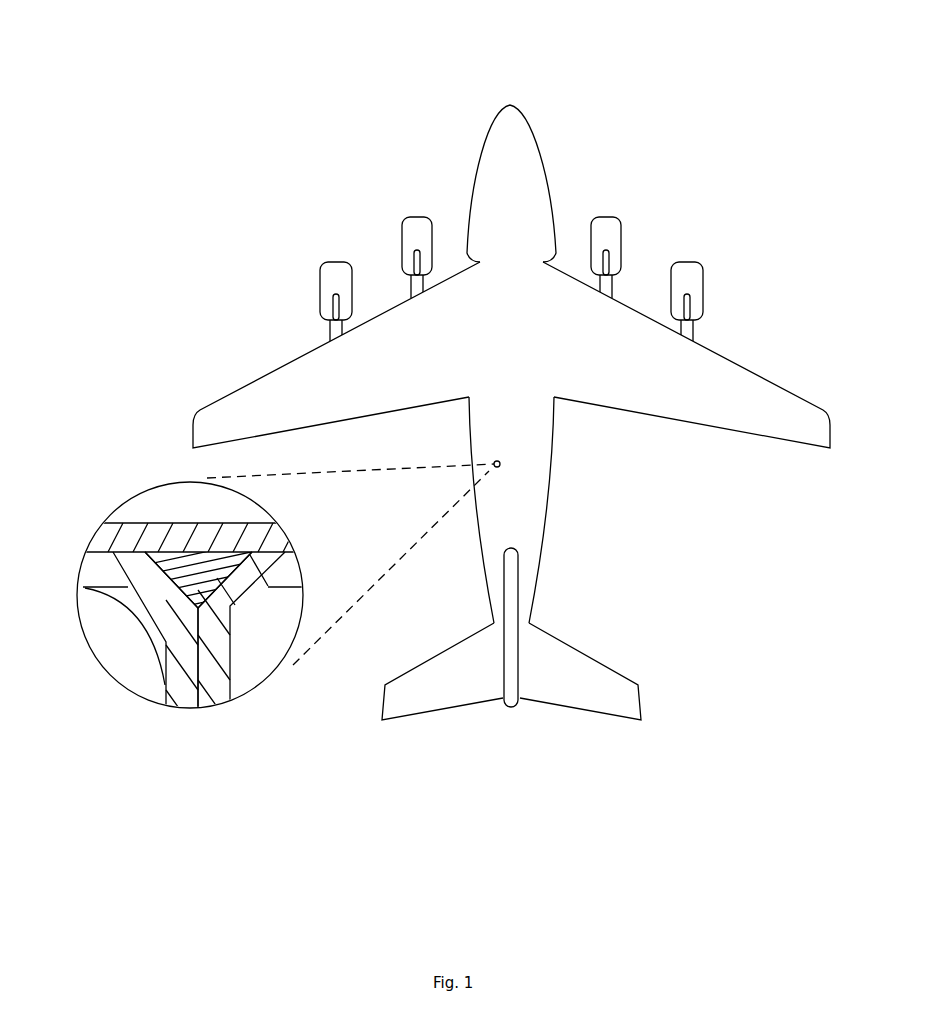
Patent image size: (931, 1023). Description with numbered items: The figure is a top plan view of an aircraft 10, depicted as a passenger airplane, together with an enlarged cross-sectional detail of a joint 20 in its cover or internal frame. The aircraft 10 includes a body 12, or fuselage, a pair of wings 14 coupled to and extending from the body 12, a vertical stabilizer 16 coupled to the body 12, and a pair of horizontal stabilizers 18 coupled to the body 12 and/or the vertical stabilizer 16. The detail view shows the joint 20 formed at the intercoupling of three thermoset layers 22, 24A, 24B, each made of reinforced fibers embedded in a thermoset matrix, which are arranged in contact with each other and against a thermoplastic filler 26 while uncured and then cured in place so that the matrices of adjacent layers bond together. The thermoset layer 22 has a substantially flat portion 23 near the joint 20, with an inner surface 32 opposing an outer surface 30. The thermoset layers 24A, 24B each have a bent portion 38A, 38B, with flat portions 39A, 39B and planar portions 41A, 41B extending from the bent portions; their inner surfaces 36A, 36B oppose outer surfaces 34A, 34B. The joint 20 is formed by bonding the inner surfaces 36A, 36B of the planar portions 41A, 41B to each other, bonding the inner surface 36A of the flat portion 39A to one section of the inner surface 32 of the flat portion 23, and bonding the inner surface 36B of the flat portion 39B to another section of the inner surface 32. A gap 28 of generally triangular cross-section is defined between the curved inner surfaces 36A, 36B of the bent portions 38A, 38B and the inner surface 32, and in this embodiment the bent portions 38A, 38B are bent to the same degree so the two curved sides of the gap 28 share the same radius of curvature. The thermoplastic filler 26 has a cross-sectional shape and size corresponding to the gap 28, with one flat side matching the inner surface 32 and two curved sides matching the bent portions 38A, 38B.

The aircraft 10 is at (660, 76).
The body 12 is at (546, 160).
The wings 14 is at (262, 385).
The vertical stabilizer 16 is at (513, 653).
The horizontal stabilizers 18 is at (592, 675).
The joint 20 is at (140, 492).
The thermoset layer 22 is at (100, 533).
The flat portion 23 is at (148, 512).
The thermoset layer 24A is at (84, 590).
The thermoset layer 24B is at (232, 655).
The thermoplastic filler 26 is at (178, 598).
The gap 28 is at (190, 552).
The outer surface 30 is at (258, 523).
The inner surface 32 is at (300, 572).
The outer surface 34A is at (100, 592).
The outer surface 34B is at (215, 690).
The inner surface 36A is at (128, 546).
The inner surface 36B is at (293, 550).
The bent portion 38A is at (165, 660).
The bent portion 38B is at (242, 580).
The flat portion 39A is at (98, 577).
The flat portion 39B is at (300, 588).
The planar portion 41A is at (188, 696).
The planar portion 41B is at (217, 696).